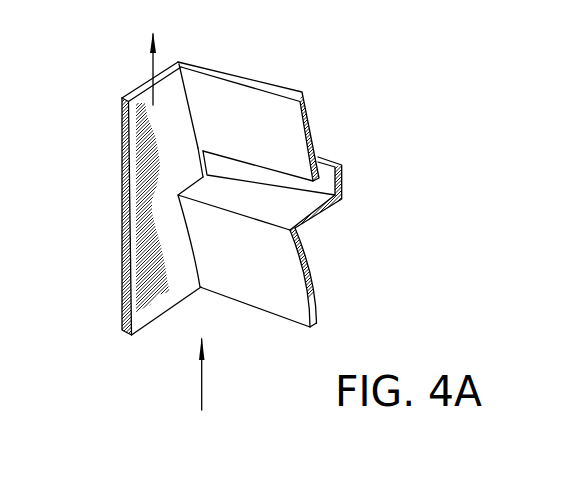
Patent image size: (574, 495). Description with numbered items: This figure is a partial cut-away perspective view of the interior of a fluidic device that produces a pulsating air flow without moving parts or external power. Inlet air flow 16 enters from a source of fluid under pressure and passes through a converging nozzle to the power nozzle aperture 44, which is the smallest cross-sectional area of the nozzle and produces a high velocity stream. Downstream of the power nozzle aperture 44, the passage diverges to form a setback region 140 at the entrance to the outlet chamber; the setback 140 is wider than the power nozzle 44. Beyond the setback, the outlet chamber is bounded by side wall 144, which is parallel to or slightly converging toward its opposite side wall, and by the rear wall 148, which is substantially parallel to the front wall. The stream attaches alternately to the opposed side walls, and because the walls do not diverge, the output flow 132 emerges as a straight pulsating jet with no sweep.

The inlet air flow 16 is at (202, 388).
The power nozzle aperture 44 is at (278, 238).
The varying outlet flow 132 is at (146, 66).
The setback region 140 is at (295, 167).
The side wall 144 is at (282, 131).
The rear wall 148 is at (139, 173).